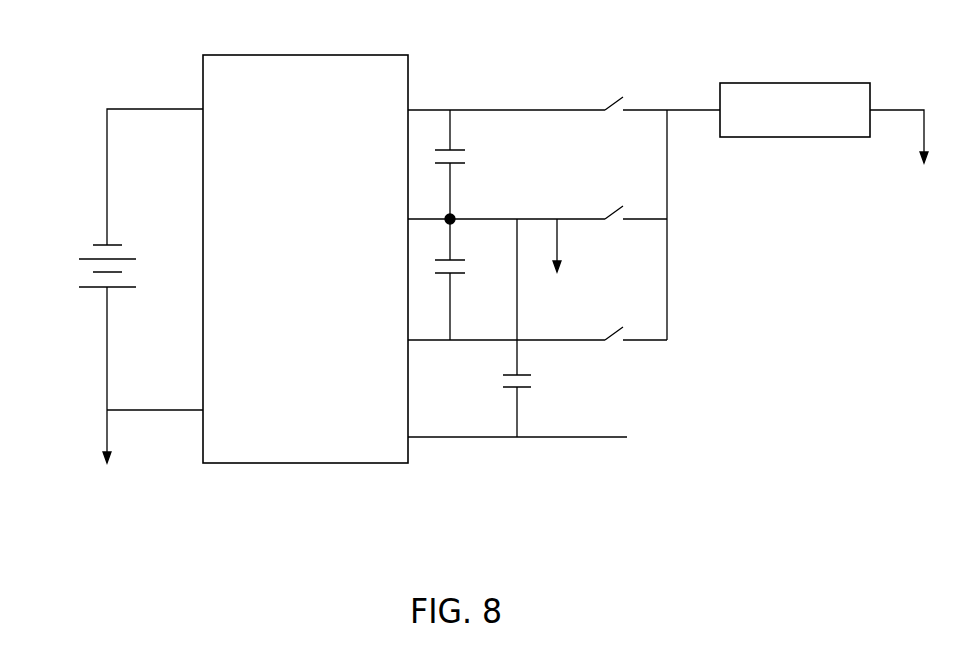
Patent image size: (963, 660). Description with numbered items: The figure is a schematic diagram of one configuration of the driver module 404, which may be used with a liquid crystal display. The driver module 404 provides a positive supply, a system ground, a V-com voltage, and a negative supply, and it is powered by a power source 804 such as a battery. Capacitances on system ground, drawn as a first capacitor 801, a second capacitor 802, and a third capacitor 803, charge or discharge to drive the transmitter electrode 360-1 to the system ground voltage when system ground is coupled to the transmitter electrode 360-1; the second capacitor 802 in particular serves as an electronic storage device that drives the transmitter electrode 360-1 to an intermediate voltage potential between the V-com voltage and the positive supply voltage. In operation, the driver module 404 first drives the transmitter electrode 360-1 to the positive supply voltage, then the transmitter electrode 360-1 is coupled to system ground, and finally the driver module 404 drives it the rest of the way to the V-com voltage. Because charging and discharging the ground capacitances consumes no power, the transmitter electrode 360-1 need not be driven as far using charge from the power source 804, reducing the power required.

The driver module 404 is at (299, 55).
The transmitter electrode 360-1 is at (797, 123).
The capacitor C1 801 is at (474, 160).
The capacitor C2 802 is at (474, 265).
The capacitor C3 803 is at (538, 379).
The power source 804 is at (68, 272).